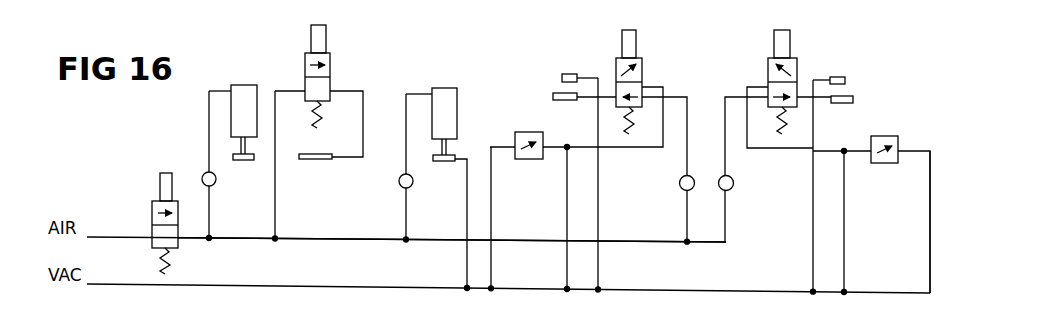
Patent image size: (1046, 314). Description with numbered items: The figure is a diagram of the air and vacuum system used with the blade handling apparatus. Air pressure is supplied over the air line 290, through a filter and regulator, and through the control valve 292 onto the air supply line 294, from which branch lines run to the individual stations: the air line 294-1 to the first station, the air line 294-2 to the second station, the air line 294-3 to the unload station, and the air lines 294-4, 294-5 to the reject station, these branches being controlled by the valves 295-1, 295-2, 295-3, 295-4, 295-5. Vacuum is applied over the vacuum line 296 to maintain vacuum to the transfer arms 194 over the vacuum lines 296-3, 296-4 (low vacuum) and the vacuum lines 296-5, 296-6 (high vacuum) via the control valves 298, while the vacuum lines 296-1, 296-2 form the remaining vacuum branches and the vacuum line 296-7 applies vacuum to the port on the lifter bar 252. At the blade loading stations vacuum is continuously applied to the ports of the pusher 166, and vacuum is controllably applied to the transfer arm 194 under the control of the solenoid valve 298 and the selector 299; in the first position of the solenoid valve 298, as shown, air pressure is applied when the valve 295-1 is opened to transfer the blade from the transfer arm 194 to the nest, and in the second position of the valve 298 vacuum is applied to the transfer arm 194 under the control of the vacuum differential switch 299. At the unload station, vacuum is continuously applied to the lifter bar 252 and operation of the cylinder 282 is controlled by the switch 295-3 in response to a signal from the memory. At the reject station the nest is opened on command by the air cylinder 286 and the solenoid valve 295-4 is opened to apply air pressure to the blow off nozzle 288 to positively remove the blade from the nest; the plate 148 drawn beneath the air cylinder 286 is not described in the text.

The piston plate 148 is at (241, 160).
The pusher 166 is at (562, 75).
The transfer arm 194 is at (555, 93).
The lifter bar 252 is at (440, 161).
The cylinder 282 is at (444, 88).
The air cylinder 286 is at (243, 85).
The blow off nozzle 288 is at (330, 160).
The air line 290 is at (133, 237).
The control valve 292 is at (152, 205).
The air line 294 is at (254, 243).
The air line 294-1 is at (726, 238).
The air line 294-2 is at (687, 240).
The air line 294-3 is at (406, 233).
The air line 294-4 is at (275, 230).
The air line 294-5 is at (209, 228).
The valve 295-1 is at (734, 183).
The valve 295-2 is at (679, 183).
The switch 295-3 is at (398, 186).
The solenoid valve 295-4 is at (331, 78).
The valve 295-5 is at (203, 174).
The vacuum line 296 is at (135, 284).
The vacuum line 296-1 is at (813, 262).
The vacuum line 296-2 is at (598, 268).
The vacuum line 296-3 is at (930, 255).
The vacuum line 296-4 is at (491, 256).
The vacuum line 296-5 is at (845, 217).
The vacuum line 296-6 is at (566, 208).
The vacuum line 296-7 is at (467, 255).
The solenoid valve 298 is at (638, 59).
The vacuum differential switch 299 is at (527, 132).